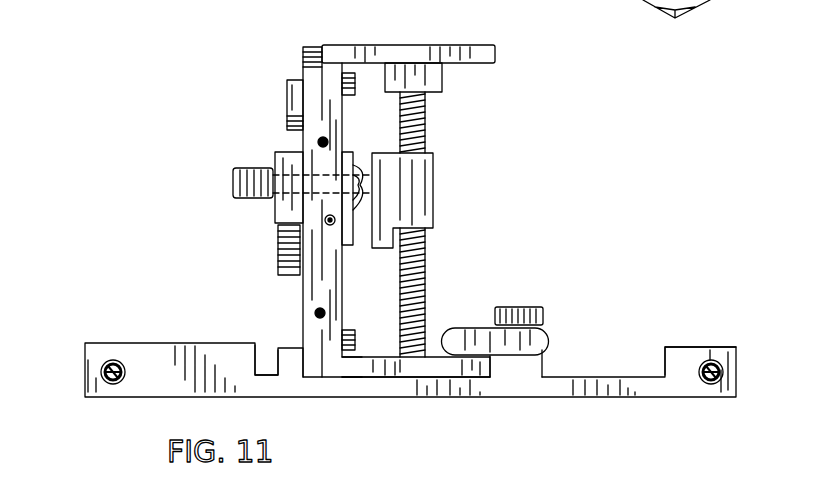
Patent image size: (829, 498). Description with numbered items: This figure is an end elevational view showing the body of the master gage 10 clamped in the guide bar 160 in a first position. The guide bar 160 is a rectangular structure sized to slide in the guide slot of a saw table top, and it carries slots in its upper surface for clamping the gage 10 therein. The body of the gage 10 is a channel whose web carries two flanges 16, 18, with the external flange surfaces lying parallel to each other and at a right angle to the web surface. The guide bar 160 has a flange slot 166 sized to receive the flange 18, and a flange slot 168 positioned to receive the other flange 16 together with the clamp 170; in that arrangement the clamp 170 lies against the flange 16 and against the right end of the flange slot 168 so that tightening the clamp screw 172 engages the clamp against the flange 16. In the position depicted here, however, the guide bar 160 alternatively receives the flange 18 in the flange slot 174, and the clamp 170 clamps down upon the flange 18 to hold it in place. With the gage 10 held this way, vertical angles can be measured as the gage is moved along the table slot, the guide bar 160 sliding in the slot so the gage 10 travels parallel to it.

The master gage 10 is at (381, 223).
The flange 16 is at (478, 45).
The flange 18 is at (402, 375).
The guide bar 160 is at (114, 410).
The flange slot 166 is at (258, 360).
The flange slot 168 is at (662, 360).
The clamp 170 is at (463, 327).
The clamp screw 172 is at (527, 307).
The flange slot 174 is at (352, 365).